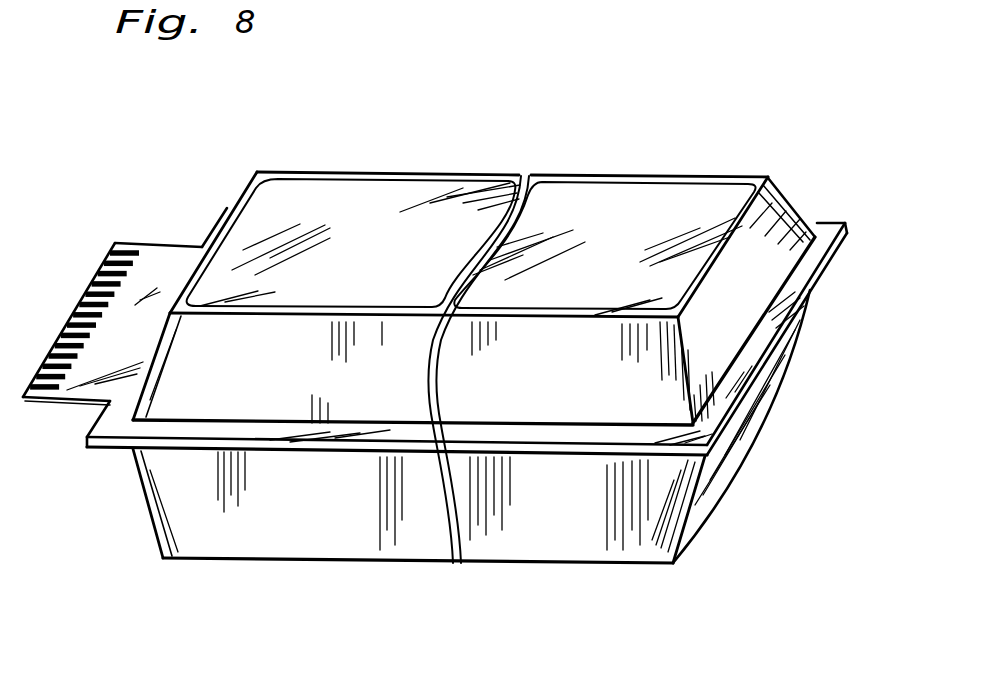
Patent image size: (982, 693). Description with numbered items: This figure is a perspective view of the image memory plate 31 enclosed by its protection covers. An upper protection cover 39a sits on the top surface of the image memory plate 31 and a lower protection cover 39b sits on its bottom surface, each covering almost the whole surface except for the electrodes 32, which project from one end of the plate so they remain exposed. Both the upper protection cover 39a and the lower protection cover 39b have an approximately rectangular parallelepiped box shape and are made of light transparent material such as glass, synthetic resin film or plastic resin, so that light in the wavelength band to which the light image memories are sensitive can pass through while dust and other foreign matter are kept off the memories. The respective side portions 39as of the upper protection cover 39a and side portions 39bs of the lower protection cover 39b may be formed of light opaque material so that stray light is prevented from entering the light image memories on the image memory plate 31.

The image memory plate 31 is at (142, 430).
The electrodes 32 is at (103, 263).
The upper protection cover 39a is at (637, 211).
The side portions of the upper protection cover 39as is at (757, 260).
The lower protection cover 39b is at (568, 550).
The side portions of the lower protection cover 39bs is at (730, 443).